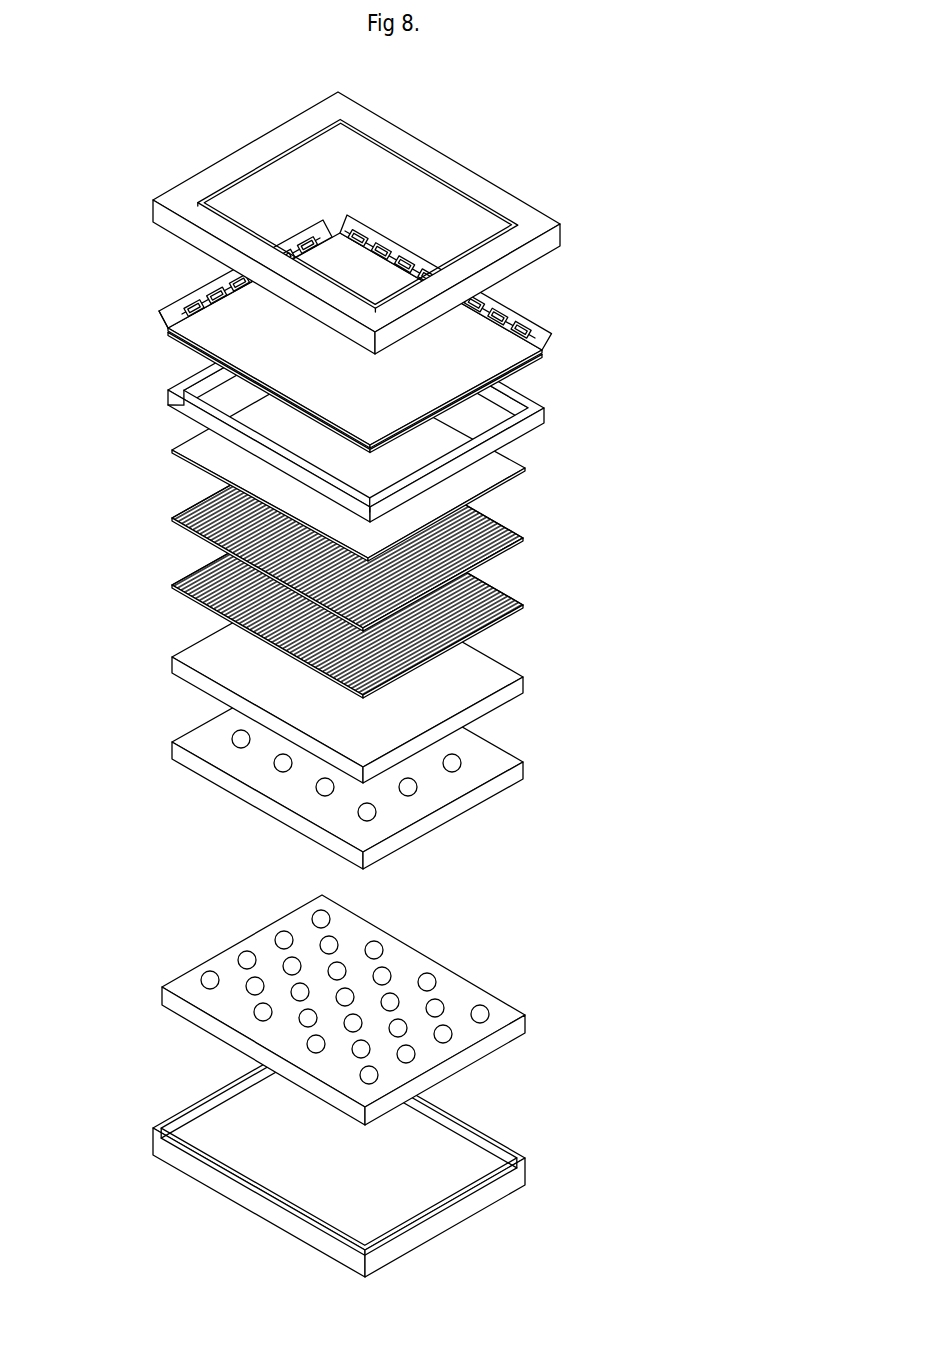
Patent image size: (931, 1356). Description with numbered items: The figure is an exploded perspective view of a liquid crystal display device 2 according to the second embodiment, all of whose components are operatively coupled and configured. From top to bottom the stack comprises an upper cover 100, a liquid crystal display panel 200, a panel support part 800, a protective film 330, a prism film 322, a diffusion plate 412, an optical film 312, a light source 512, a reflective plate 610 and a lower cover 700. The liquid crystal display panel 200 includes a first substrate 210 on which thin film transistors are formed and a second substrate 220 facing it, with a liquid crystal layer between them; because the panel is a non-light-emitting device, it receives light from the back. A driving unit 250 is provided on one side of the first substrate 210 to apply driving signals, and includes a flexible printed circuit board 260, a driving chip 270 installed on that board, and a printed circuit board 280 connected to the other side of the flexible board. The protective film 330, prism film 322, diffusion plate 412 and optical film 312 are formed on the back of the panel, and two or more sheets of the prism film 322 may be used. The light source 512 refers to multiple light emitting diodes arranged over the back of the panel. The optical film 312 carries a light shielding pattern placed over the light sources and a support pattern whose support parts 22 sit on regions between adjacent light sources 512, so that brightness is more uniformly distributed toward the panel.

The liquid crystal display device 2 is at (212, 138).
The upper cover 100 is at (559, 230).
The liquid crystal display panel 200 is at (413, 343).
The first substrate 210 is at (539, 350).
The second substrate 220 is at (514, 365).
The driving unit 250 is at (299, 287).
The flexible printed circuit board 260 is at (190, 307).
The driving chip 270 is at (139, 335).
The printed circuit board 280 is at (187, 293).
The panel support part 800 is at (168, 400).
The protective film 330 is at (498, 477).
The prism film 322 is at (503, 597).
The diffusion plate 412 is at (500, 700).
The support part 22 is at (462, 762).
The optical film 312 is at (376, 760).
The light source 512 is at (427, 973).
The reflective plate 610 is at (349, 1010).
The lower cover 700 is at (528, 1160).